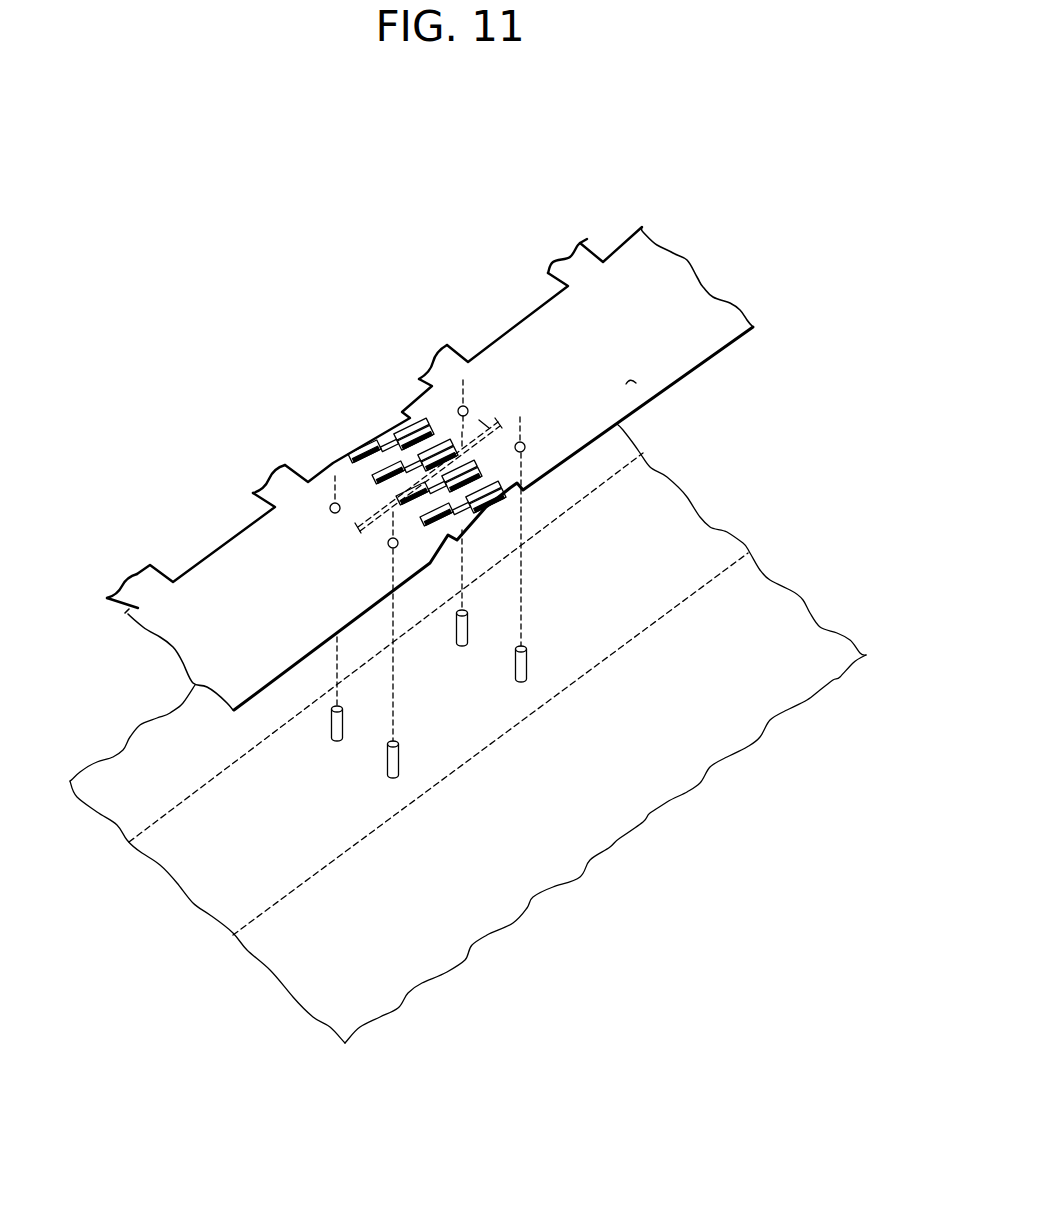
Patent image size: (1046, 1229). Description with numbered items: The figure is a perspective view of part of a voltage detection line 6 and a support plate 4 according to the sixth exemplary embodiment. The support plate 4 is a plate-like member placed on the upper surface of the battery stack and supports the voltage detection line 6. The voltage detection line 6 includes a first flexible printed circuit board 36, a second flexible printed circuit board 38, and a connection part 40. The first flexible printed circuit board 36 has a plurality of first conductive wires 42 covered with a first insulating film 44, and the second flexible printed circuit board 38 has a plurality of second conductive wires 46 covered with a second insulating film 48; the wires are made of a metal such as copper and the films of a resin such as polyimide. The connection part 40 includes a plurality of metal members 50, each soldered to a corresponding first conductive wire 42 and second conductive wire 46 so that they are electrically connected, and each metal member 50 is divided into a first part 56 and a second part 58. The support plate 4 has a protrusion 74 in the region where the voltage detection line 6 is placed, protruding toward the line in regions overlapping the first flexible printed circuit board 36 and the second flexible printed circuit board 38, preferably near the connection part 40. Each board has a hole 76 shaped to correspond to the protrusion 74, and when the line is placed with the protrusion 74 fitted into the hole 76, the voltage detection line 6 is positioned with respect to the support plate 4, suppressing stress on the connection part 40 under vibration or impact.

The support plate 4 is at (700, 727).
The voltage detection line 6 is at (745, 255).
The first flexible printed circuit board 36 is at (132, 631).
The second flexible printed circuit board 38 is at (692, 380).
The connection part 40 is at (493, 515).
The first conductive wire 42 is at (366, 514).
The first insulating film 44 is at (224, 558).
The second conductive wire 46 is at (483, 422).
The second insulating film 48 is at (630, 388).
The metal member 50 is at (405, 300).
The first part 56 is at (365, 447).
The second part 58 is at (393, 432).
The protrusion 74 is at (528, 662).
The hole 76 is at (328, 507).